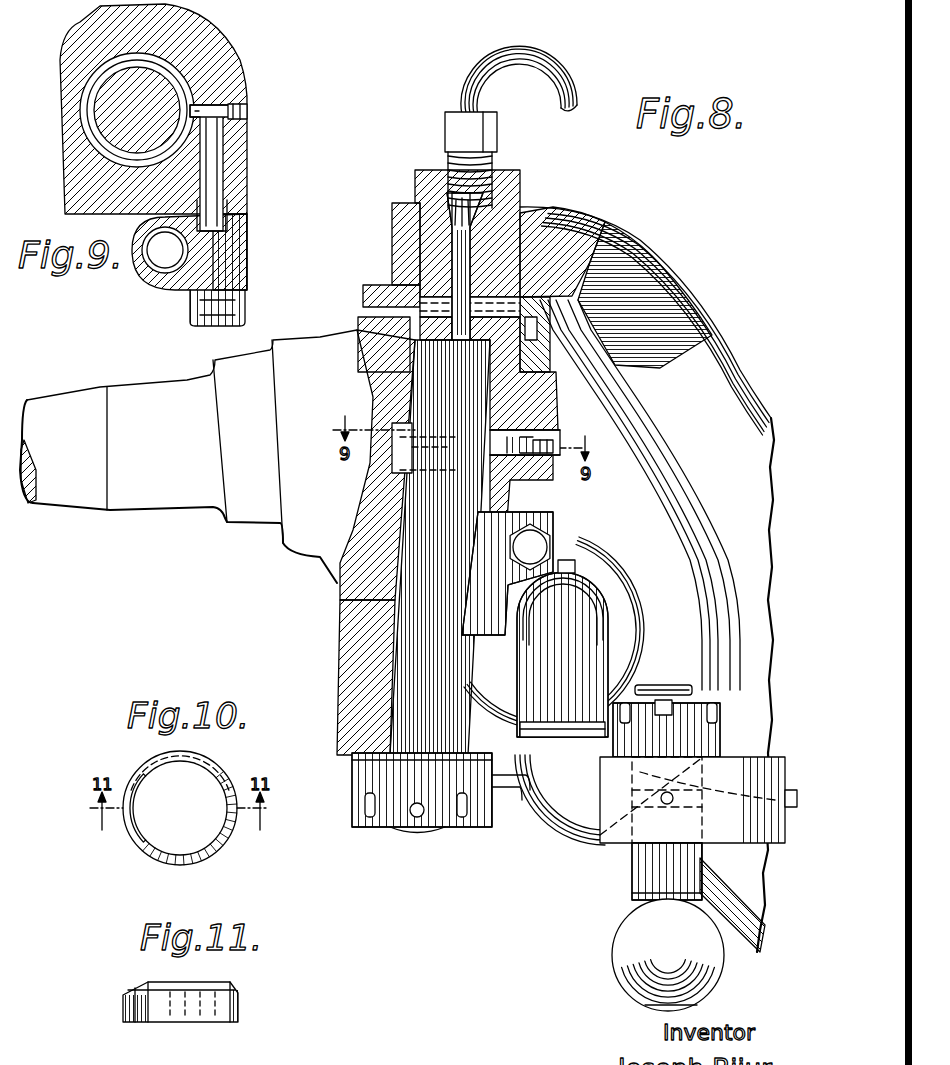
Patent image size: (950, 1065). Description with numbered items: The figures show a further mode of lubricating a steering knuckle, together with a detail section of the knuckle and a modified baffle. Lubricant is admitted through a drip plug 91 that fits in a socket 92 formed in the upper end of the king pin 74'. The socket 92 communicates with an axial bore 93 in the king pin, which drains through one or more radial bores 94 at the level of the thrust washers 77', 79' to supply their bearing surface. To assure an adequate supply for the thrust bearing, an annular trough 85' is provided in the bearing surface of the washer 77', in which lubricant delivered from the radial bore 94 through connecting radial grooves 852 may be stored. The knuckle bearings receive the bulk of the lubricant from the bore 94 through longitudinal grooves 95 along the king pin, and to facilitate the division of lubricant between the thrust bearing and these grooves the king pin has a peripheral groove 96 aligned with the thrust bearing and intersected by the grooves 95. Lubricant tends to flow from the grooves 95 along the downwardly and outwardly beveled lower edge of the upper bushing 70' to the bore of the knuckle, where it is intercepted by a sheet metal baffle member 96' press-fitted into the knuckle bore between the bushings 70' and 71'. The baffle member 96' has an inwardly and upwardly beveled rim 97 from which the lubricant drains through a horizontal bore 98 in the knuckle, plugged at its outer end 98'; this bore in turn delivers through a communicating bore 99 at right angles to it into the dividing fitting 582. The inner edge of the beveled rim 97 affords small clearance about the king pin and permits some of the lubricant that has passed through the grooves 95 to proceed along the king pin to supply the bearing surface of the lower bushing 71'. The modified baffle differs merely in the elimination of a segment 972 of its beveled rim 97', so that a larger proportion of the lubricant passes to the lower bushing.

In FIG. 8, the drip plug 91 is at (487, 192).
In FIG. 8, the socket 92 is at (521, 193).
In FIG. 8, the axial bore 93 is at (533, 268).
In FIG. 8, the radial bore 94 is at (478, 273).
In FIG. 8, the connecting radial grooves 852 is at (590, 262).
In FIG. 8, the thrust washer 79' is at (640, 453).
In FIG. 8, the thrust washer 77' is at (645, 321).
In FIG. 8, the longitudinal grooves 95 is at (358, 330).
In FIG. 8, the bushing 70' is at (548, 418).
In FIG. 8, the peripheral groove 96 is at (386, 236).
In FIG. 8, the annular trough 85' is at (376, 264).
In FIG. 8, the beveled rim 97 is at (387, 435).
In FIG. 9, the horizontal bore 98 is at (235, 71).
In FIG. 8, the horizontal bore 98 is at (540, 431).
In FIG. 9, the plug 98' is at (267, 91).
In FIG. 8, the plug 98' is at (578, 475).
In FIG. 9, the dividing fitting 582 is at (210, 254).
In FIG. 8, the dividing fitting 582 is at (505, 598).
In FIG. 8, the baffle member 96' is at (371, 465).
In FIG. 8, the bushing 71' is at (390, 547).
In FIG. 8, the king pin 74' is at (391, 716).
In FIG. 9, the communicating bore 99 is at (213, 170).
In FIG. 10, the beveled rim 97' is at (206, 806).
In FIG. 11, the beveled rim 97' is at (207, 992).
In FIG. 10, the eliminated segment 972 is at (140, 822).
In FIG. 11, the eliminated segment 972 is at (137, 993).